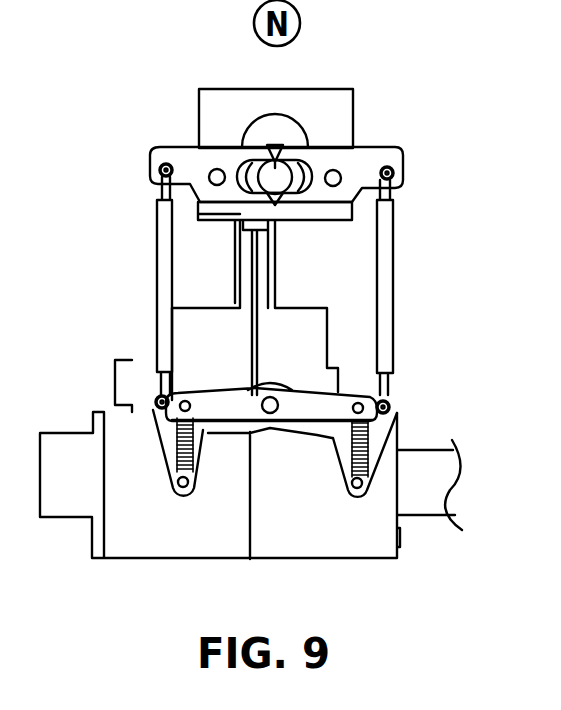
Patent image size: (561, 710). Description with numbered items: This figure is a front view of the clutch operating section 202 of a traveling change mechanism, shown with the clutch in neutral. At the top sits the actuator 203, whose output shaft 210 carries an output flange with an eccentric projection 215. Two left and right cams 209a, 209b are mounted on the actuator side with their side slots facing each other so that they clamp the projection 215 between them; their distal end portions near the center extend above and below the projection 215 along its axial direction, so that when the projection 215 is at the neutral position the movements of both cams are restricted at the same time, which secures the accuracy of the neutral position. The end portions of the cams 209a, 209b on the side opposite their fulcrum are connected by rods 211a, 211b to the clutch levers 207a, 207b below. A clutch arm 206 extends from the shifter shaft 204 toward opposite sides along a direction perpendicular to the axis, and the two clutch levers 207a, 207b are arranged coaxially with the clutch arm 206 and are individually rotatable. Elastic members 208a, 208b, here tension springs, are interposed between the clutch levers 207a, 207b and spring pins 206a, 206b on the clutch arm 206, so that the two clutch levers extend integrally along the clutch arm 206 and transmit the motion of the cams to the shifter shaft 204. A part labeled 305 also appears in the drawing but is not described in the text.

The actuator 203 is at (322, 88).
The output shaft 210 is at (272, 146).
The dome cover 305 is at (305, 131).
The eccentric projection 215 is at (283, 175).
The right cam 209a is at (357, 178).
The left cam 209b is at (228, 163).
The clutch operating section 202 is at (404, 213).
The right rod 211a is at (391, 260).
The left rod 211b is at (168, 268).
The shifter shaft 204 is at (272, 398).
The clutch arm 206 is at (368, 398).
The right spring pin 206a is at (392, 402).
The left spring pin 206b is at (157, 396).
The right elastic member 208a is at (356, 447).
The left elastic member 208b is at (178, 447).
The right clutch lever 207a is at (317, 435).
The left clutch lever 207b is at (223, 428).